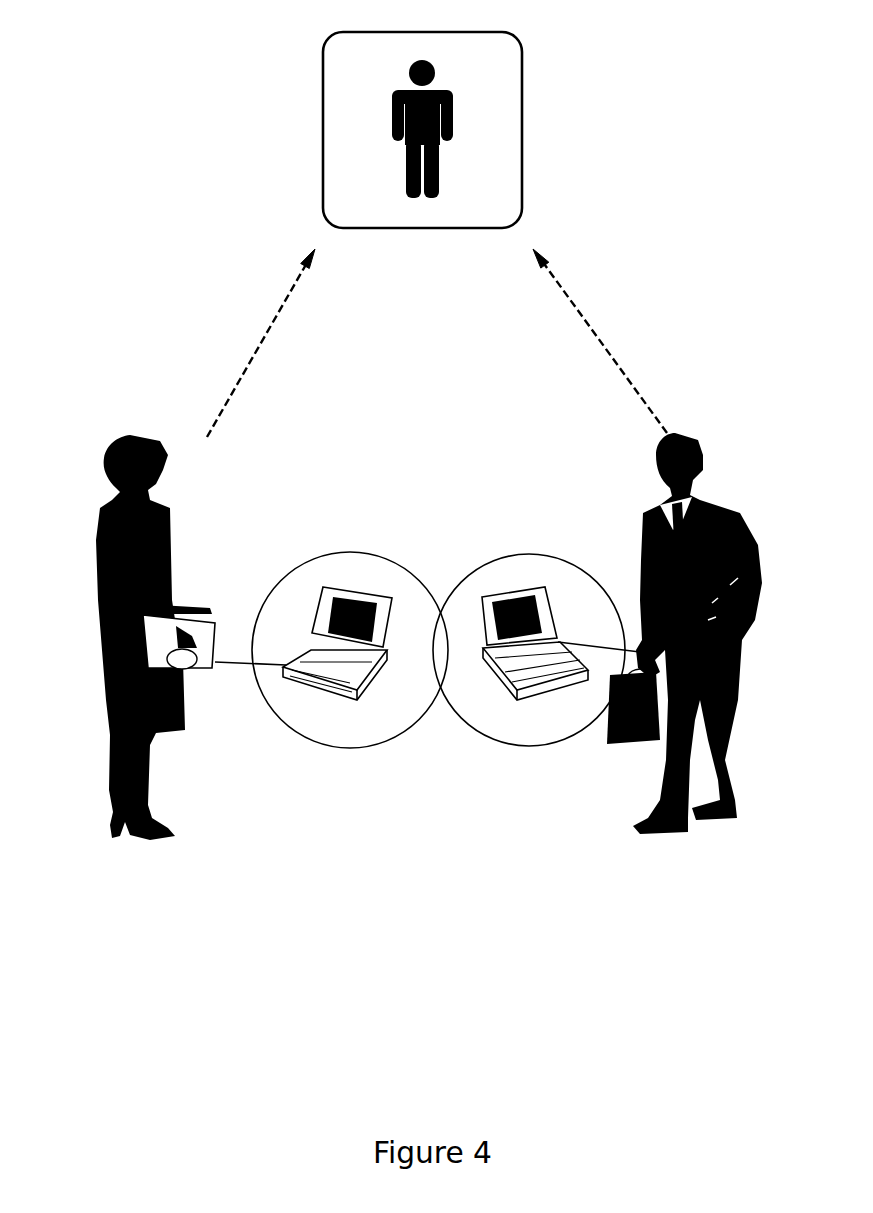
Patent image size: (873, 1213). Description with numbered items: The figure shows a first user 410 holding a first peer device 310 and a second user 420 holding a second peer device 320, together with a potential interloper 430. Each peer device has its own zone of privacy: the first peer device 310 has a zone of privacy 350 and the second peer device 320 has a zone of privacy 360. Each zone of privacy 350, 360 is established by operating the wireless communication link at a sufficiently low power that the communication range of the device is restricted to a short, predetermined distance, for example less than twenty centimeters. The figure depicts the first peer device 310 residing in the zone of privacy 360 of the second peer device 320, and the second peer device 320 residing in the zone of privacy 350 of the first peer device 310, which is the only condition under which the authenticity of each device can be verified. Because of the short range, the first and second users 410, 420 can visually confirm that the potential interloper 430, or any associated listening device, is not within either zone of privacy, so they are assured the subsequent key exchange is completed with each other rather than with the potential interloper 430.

The first peer device 310 is at (340, 695).
The second peer device 320 is at (530, 695).
The zone of privacy 350 is at (337, 553).
The zone of privacy 360 is at (518, 552).
The first user 410 is at (98, 742).
The second user 420 is at (727, 718).
The potential interloper 430 is at (530, 72).